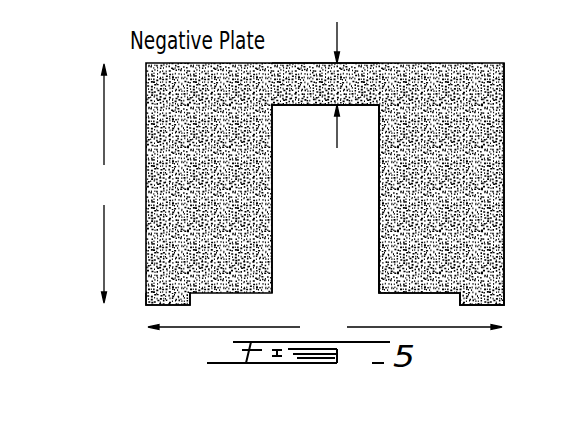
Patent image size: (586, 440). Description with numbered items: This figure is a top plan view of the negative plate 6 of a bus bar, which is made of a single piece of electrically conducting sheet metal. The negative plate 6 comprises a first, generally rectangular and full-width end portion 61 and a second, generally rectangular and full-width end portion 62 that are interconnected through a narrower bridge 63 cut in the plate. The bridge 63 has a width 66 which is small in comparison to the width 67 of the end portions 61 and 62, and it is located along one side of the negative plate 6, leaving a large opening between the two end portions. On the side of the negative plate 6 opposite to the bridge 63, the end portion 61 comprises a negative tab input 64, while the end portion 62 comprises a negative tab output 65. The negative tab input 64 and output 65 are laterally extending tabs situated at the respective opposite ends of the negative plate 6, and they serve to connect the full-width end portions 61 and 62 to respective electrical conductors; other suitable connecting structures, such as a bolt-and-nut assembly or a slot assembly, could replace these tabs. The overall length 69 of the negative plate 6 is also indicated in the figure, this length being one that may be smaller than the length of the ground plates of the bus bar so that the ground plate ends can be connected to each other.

The negative plate 6 is at (355, 188).
The first end portion 61 is at (152, 105).
The second end portion 62 is at (504, 150).
The bridge 63 is at (302, 63).
The negative tab input 64 is at (163, 306).
The negative tab output 65 is at (495, 306).
The width of the bridge 66 is at (333, 85).
The width of the end portions 67 is at (104, 183).
The length of the negative plate 69 is at (325, 326).